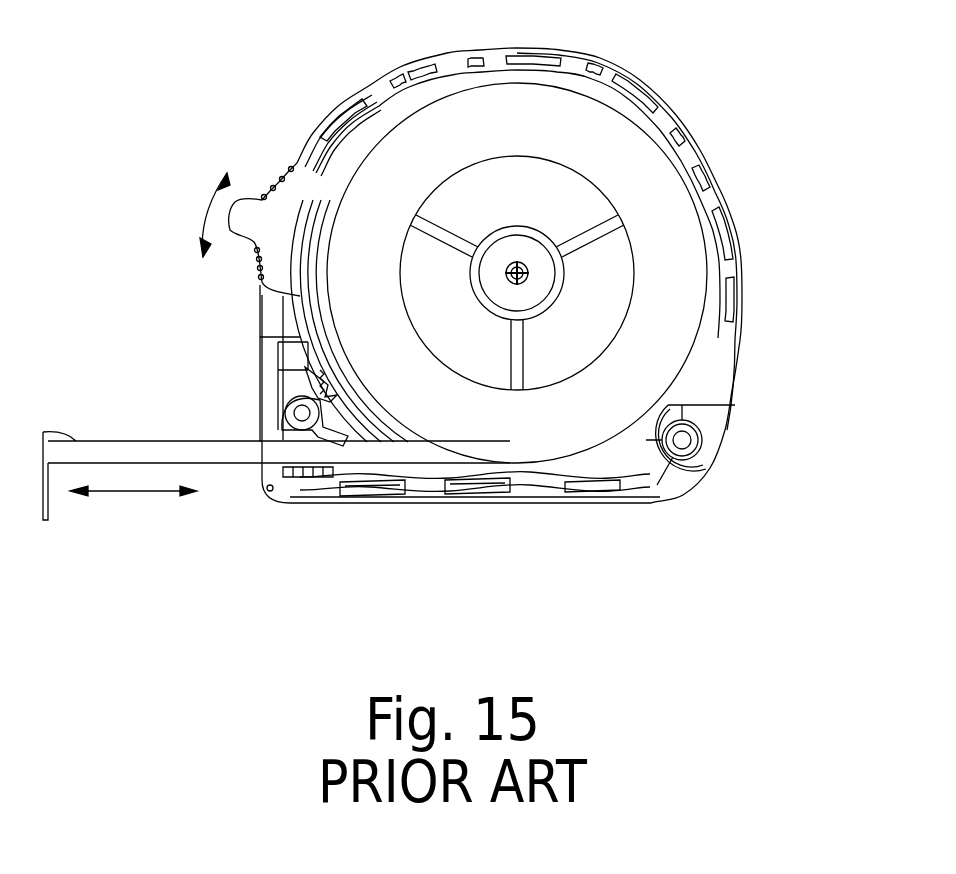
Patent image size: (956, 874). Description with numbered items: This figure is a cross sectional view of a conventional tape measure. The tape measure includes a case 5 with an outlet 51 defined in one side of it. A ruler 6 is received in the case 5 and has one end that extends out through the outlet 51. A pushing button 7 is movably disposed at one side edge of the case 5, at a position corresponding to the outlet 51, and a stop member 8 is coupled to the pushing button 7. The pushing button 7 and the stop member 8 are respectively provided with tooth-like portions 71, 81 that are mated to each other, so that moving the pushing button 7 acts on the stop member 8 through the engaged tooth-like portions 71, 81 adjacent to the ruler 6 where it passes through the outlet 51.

The case 5 is at (700, 137).
The ruler 6 is at (693, 263).
The pushing button 7 is at (250, 155).
The stop member 8 is at (257, 398).
The tooth-like portion 81 is at (293, 370).
The tooth-like portion 71 is at (343, 398).
The outlet 51 is at (262, 465).